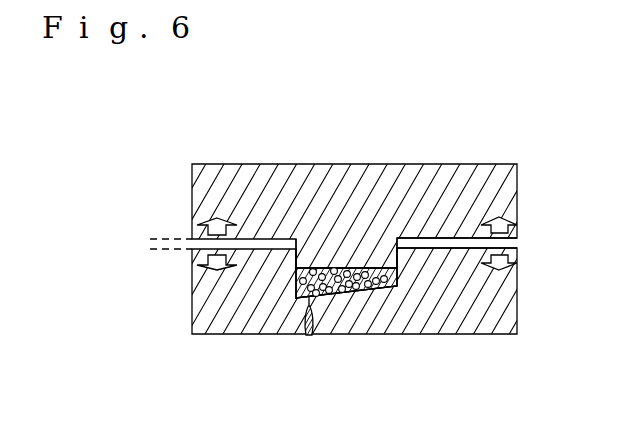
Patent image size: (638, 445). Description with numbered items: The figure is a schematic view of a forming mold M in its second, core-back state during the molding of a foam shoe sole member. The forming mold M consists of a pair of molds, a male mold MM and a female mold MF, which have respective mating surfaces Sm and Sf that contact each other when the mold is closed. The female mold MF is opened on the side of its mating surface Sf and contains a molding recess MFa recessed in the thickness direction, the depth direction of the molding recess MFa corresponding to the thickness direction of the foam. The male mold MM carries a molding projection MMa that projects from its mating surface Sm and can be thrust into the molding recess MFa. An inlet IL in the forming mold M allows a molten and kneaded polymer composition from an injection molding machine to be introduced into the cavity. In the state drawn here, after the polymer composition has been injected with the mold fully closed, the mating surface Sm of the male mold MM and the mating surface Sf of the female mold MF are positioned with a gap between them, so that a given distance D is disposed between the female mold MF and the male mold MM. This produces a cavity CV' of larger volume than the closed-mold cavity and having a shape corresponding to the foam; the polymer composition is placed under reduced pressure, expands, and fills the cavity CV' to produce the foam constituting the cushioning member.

The forming mold M is at (256, 101).
The male mold MM is at (518, 215).
The female mold MF is at (518, 298).
The molding projection MMa is at (351, 266).
The molding recess MFa is at (303, 300).
The cavity CV' is at (348, 336).
The inlet IL is at (307, 335).
The mating surface of the female mold Sf is at (440, 248).
The mating surface of the male mold Sm is at (458, 238).
The distance D is at (163, 295).